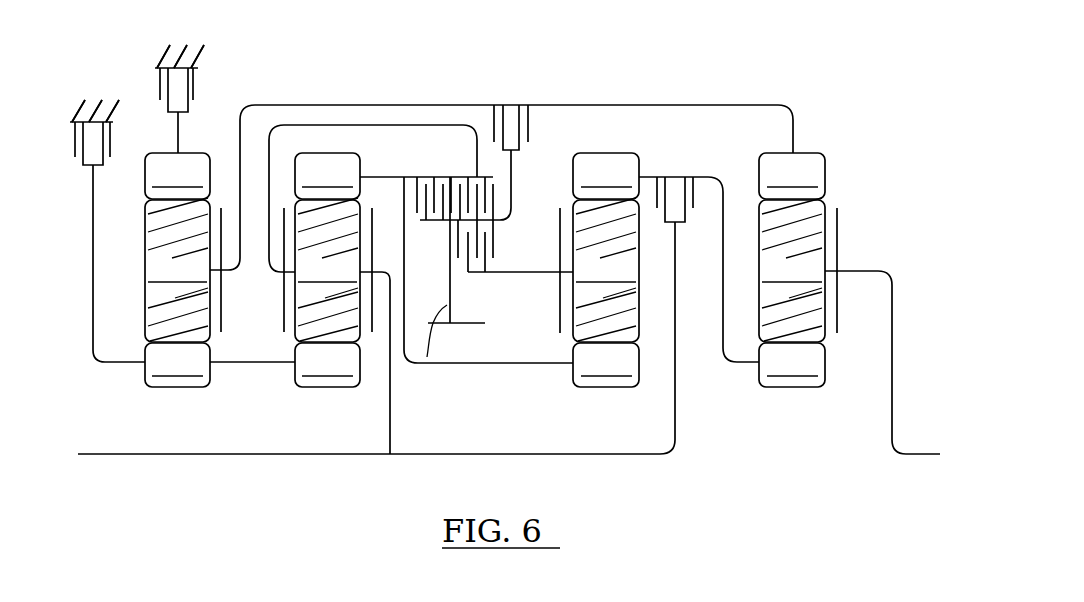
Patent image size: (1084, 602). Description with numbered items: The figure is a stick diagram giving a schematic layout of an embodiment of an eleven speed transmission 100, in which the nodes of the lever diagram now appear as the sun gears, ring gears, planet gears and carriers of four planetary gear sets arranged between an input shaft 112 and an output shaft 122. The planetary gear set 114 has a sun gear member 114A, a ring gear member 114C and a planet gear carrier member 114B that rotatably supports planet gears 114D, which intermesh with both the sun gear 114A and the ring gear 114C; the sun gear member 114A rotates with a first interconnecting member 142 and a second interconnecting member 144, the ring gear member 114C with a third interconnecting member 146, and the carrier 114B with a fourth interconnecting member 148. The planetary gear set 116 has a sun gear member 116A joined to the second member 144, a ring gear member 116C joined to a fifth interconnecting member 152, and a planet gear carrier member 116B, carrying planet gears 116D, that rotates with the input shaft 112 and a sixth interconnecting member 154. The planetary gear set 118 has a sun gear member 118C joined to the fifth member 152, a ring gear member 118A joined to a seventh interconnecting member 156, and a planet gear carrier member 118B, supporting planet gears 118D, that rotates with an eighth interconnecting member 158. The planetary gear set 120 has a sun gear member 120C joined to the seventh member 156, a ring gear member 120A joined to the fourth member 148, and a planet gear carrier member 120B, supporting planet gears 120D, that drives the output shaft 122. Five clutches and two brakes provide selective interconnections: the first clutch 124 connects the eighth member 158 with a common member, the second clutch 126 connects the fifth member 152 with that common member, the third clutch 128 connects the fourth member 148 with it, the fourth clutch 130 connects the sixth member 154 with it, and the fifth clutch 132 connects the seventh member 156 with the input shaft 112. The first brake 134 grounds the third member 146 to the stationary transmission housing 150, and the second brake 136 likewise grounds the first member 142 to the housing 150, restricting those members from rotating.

The transmission 100 is at (812, 88).
The input shaft or member 112 is at (103, 457).
The planetary gear set 114 is at (214, 328).
The sun gear member 114A is at (177, 365).
The planet gear carrier member 114B is at (222, 310).
The ring gear member 114C is at (177, 176).
The planet gears 114D is at (177, 270).
The planetary gear set 116 is at (324, 322).
The sun gear member 116A is at (327, 365).
The planet gear carrier member 116B is at (283, 313).
The ring gear member 116C is at (327, 176).
The planet gears 116D is at (342, 326).
The planetary gear set 118 is at (572, 328).
The ring gear member 118A is at (606, 176).
The planet gear carrier member 118B is at (552, 303).
The sun gear member 118C is at (606, 365).
The planet gears 118D is at (606, 270).
The planetary gear set 120 is at (828, 328).
The ring gear member 120A is at (792, 176).
The planet gear carrier member 120B is at (837, 237).
The sun gear member 120C is at (792, 365).
The planet gears 120D is at (792, 270).
The output shaft or member 122 is at (921, 457).
The first clutch 124 is at (537, 240).
The second clutch 126 is at (422, 222).
The third clutch 128 is at (530, 123).
The fourth clutch 130 is at (495, 200).
The fifth clutch 132 is at (658, 197).
The first brake 134 is at (196, 88).
The second brake 136 is at (110, 140).
The first shaft or interconnecting member 142 is at (92, 322).
The second shaft or interconnecting member 144 is at (255, 363).
The third shaft or interconnecting member 146 is at (178, 144).
The fourth shaft or interconnecting member 148 is at (408, 105).
The stationary element or transmission housing 150 is at (104, 104).
The fifth shaft or interconnecting member 152 is at (465, 385).
The sixth shaft or interconnecting member 154 is at (322, 125).
The seventh shaft or interconnecting member 156 is at (725, 215).
The eighth shaft or interconnecting member 158 is at (528, 272).